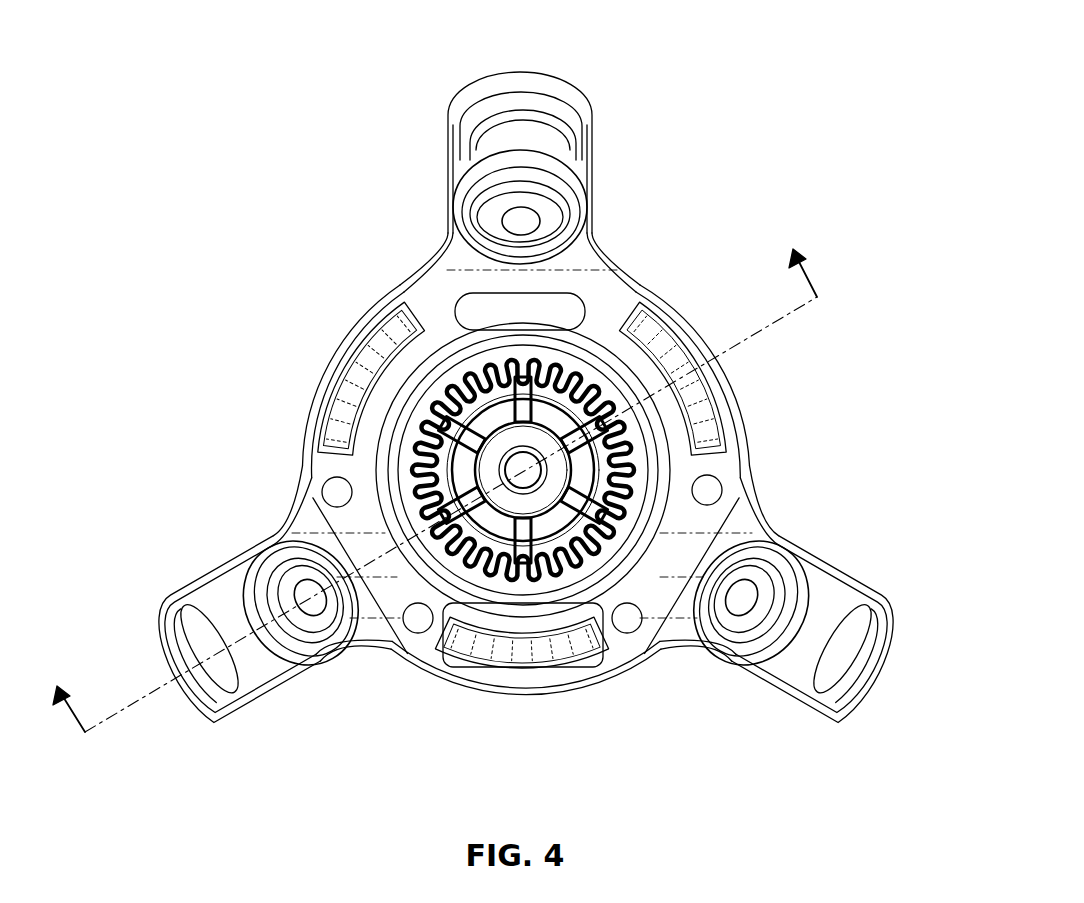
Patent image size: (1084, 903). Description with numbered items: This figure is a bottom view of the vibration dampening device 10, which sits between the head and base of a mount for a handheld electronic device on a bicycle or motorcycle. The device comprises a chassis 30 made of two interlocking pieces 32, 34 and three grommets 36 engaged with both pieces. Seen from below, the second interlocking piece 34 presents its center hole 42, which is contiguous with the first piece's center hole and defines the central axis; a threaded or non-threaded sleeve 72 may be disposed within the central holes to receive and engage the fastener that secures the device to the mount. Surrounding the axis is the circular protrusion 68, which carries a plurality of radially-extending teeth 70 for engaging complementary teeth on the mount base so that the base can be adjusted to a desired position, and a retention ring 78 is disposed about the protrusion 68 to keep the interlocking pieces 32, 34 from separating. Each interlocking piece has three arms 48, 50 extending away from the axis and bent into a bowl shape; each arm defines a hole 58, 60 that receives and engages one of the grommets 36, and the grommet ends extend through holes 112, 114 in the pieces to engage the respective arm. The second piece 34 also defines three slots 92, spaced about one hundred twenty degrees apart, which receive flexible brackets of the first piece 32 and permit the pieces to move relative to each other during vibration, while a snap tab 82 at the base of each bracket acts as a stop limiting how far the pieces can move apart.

The vibration dampening device 10 is at (812, 342).
The chassis 30 is at (748, 412).
The interlocking piece 32 is at (212, 572).
The interlocking piece 34 is at (704, 347).
The grommets 36 is at (522, 130).
The center hole 42 is at (533, 453).
The arms 48 is at (590, 130).
The arms 50 is at (580, 198).
The hole 58 is at (476, 130).
The hole 60 is at (470, 225).
The circular protrusion 68 is at (417, 400).
The radially-extending teeth 70 is at (630, 472).
The sleeve 72 is at (500, 477).
The retention ring 78 is at (407, 467).
The snap tab 82 is at (380, 332).
The slots 92 is at (323, 405).
The hole 112 is at (583, 117).
The hole 114 is at (580, 230).